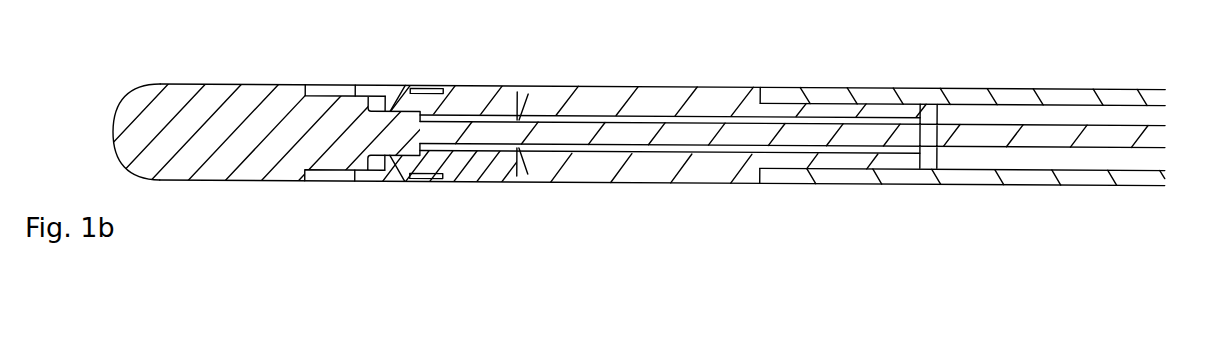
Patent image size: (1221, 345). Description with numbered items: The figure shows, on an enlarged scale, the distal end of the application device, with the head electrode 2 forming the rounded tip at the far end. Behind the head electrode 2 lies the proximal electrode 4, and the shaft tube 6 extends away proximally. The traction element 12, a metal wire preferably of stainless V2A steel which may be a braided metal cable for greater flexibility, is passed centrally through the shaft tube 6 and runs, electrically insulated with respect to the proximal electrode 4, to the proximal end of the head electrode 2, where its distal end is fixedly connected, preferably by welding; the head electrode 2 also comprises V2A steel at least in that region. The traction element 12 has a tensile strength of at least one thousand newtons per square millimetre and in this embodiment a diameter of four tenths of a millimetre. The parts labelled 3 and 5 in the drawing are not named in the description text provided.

The head electrode 2 is at (222, 84).
The coupling sleeve 3 is at (373, 84).
The proximal electrode 4 is at (625, 84).
The catheter assembly 5 is at (724, 58).
The shaft tube 6 is at (1027, 86).
The traction element 12 is at (920, 100).